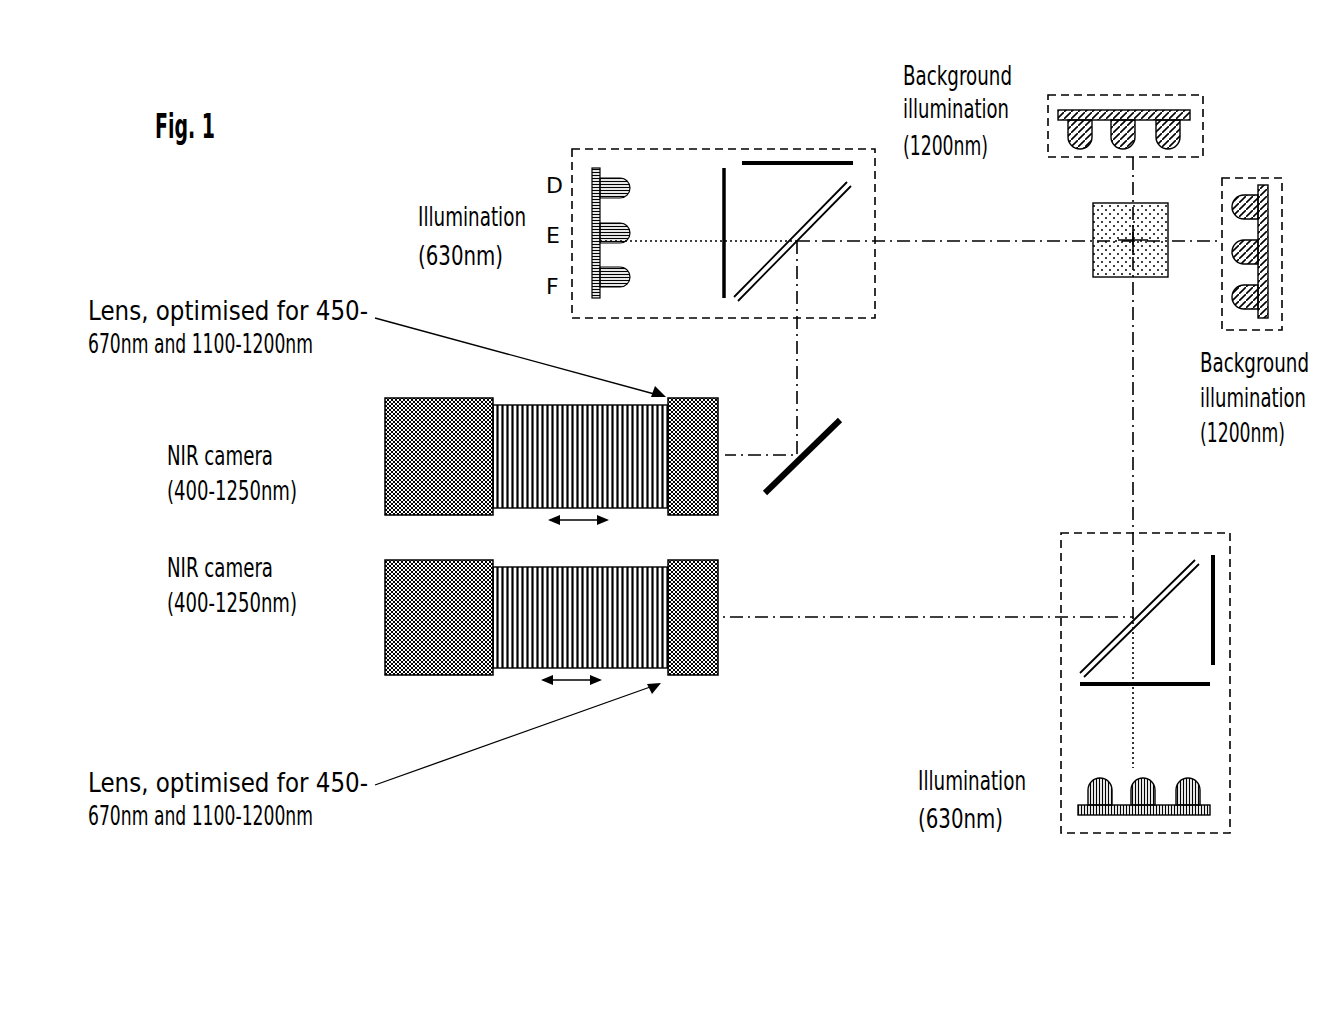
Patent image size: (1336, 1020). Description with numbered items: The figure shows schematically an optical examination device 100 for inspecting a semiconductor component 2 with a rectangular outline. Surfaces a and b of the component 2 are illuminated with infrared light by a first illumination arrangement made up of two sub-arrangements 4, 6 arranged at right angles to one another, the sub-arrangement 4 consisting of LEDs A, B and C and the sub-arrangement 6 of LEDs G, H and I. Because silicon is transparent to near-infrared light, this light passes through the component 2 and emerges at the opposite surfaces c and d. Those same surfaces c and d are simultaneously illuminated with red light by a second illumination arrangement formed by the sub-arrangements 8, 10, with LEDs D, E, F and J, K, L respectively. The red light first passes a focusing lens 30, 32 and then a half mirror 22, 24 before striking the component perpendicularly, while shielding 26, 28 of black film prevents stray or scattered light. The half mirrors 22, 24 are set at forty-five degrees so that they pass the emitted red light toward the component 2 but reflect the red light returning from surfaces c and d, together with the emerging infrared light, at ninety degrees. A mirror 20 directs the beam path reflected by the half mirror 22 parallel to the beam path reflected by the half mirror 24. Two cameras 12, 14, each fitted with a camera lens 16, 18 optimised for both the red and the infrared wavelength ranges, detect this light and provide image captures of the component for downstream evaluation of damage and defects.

The optical examination device 100 is at (398, 126).
The semiconductor component 2 is at (1129, 249).
The sub-arrangement of first illumination arrangement 4 is at (1113, 114).
The sub-arrangement of first illumination arrangement 6 is at (1265, 236).
The sub-arrangement of second illumination arrangement 8 is at (611, 206).
The sub-arrangement of second illumination arrangement 10 is at (1159, 702).
The camera 12 is at (439, 636).
The camera 14 is at (439, 442).
The camera lens 16 is at (693, 638).
The camera lens 18 is at (693, 441).
The mirror 20 is at (803, 464).
The half mirror 22 is at (792, 241).
The half mirror 24 is at (1139, 618).
The shielding 26 is at (797, 138).
The shielding 28 is at (1240, 610).
The focusing lens 30 is at (698, 233).
The focusing lens 32 is at (1145, 705).